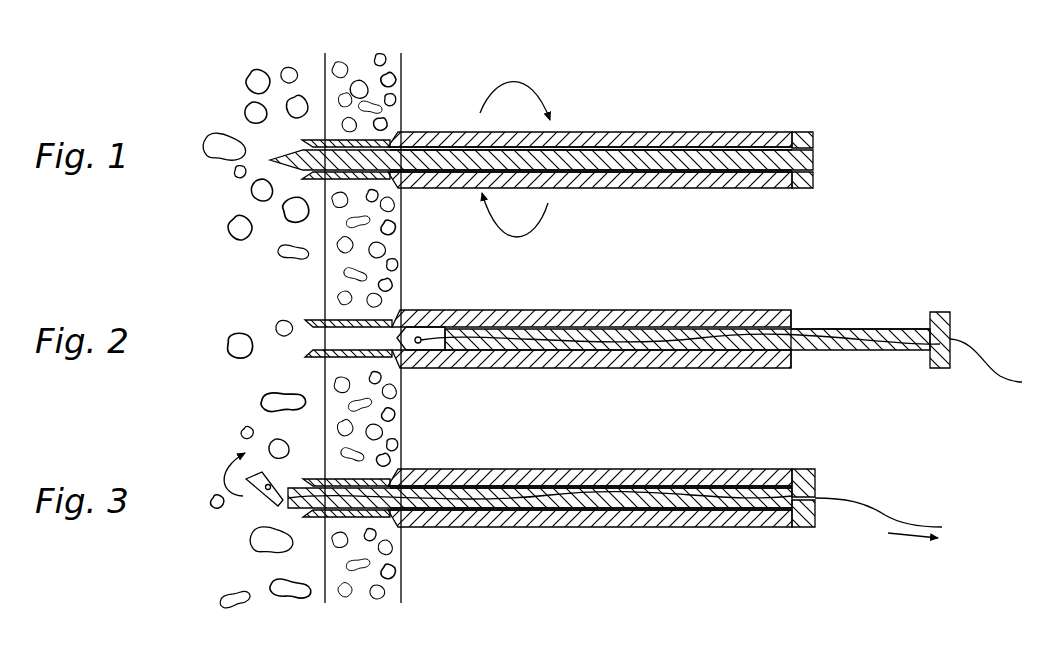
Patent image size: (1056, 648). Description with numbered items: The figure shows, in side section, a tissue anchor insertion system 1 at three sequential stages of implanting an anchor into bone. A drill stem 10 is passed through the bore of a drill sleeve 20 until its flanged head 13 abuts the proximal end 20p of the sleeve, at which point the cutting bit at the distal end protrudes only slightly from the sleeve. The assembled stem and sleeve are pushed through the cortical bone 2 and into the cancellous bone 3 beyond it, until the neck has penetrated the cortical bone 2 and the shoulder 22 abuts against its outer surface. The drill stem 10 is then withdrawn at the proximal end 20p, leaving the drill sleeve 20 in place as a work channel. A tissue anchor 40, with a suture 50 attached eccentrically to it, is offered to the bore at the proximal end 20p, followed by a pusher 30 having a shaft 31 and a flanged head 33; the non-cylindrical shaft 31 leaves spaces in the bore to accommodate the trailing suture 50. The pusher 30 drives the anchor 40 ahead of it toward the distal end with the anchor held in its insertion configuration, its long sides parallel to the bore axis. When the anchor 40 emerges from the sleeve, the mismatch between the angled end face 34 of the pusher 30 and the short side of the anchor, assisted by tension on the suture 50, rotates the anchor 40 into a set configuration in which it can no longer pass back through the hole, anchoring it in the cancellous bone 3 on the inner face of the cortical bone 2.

In FIG. 1, the insertion device / direction of movement 1 is at (597, 62).
In FIG. 2, the insertion device / direction of movement 1 is at (597, 275).
In FIG. 3, the insertion device / direction of movement 1 is at (567, 448).
In FIG. 1, the cortical bone 2 is at (357, 57).
In FIG. 1, the cancellous bone 3 is at (242, 172).
In FIG. 1, the drill stem 10 is at (700, 165).
In FIG. 1, the flanged head 13 is at (812, 150).
In FIG. 1, the drill sleeve 20 is at (640, 140).
In FIG. 2, the drill sleeve 20 is at (640, 314).
In FIG. 3, the drill sleeve 20 is at (602, 470).
In FIG. 2, the proximal end 20p is at (803, 312).
In FIG. 1, the shoulder 22 is at (393, 130).
In FIG. 2, the shoulder 22 is at (348, 338).
In FIG. 3, the shoulder 22 is at (547, 498).
In FIG. 2, the pusher 30 is at (889, 322).
In FIG. 3, the pusher 30 is at (705, 490).
In FIG. 2, the shaft 31 is at (830, 351).
In FIG. 2, the flanged head 33 is at (929, 368).
In FIG. 2, the end face 34 is at (443, 328).
In FIG. 2, the tissue anchor 40 is at (419, 345).
In FIG. 3, the tissue anchor 40 is at (270, 500).
In FIG. 2, the suture 50 is at (985, 372).
In FIG. 3, the suture 50 is at (895, 520).